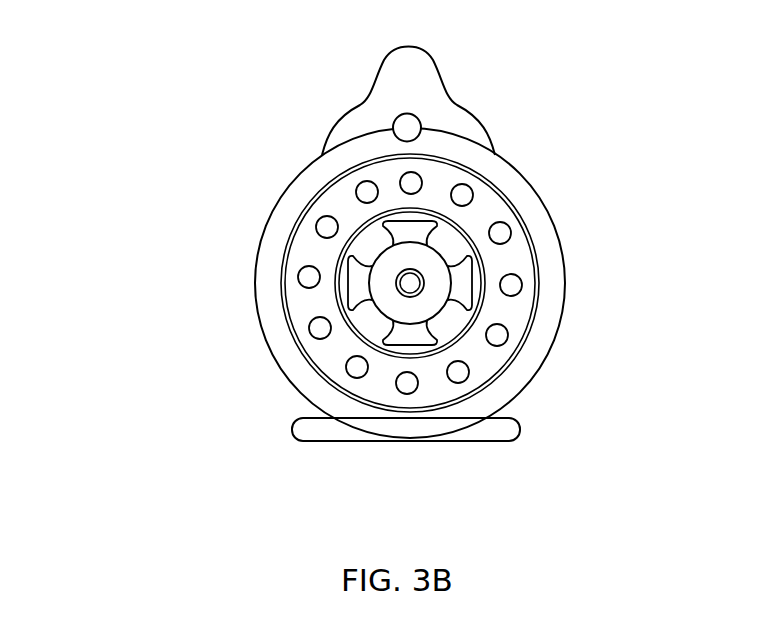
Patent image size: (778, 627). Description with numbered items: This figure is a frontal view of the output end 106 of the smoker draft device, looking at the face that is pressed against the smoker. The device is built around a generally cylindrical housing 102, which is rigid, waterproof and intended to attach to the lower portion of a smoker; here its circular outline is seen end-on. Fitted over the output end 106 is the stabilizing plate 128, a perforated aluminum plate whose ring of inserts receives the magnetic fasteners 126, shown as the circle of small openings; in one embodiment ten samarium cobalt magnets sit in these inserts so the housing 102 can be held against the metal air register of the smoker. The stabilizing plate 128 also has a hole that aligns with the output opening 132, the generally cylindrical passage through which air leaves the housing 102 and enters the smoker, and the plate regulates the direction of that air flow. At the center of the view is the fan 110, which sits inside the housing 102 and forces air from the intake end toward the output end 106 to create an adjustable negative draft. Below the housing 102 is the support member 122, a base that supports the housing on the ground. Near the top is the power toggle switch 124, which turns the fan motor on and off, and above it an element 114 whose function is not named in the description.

The housing 102 is at (273, 355).
The output end 106 is at (237, 288).
The fan 110 is at (458, 286).
The mounting lobe 114 is at (386, 70).
The support member 122 is at (520, 433).
The power toggle switch 124 is at (393, 128).
The magnetic fastener 126 is at (457, 197).
The stabilizing plate 128 is at (488, 210).
The output opening 132 is at (407, 358).